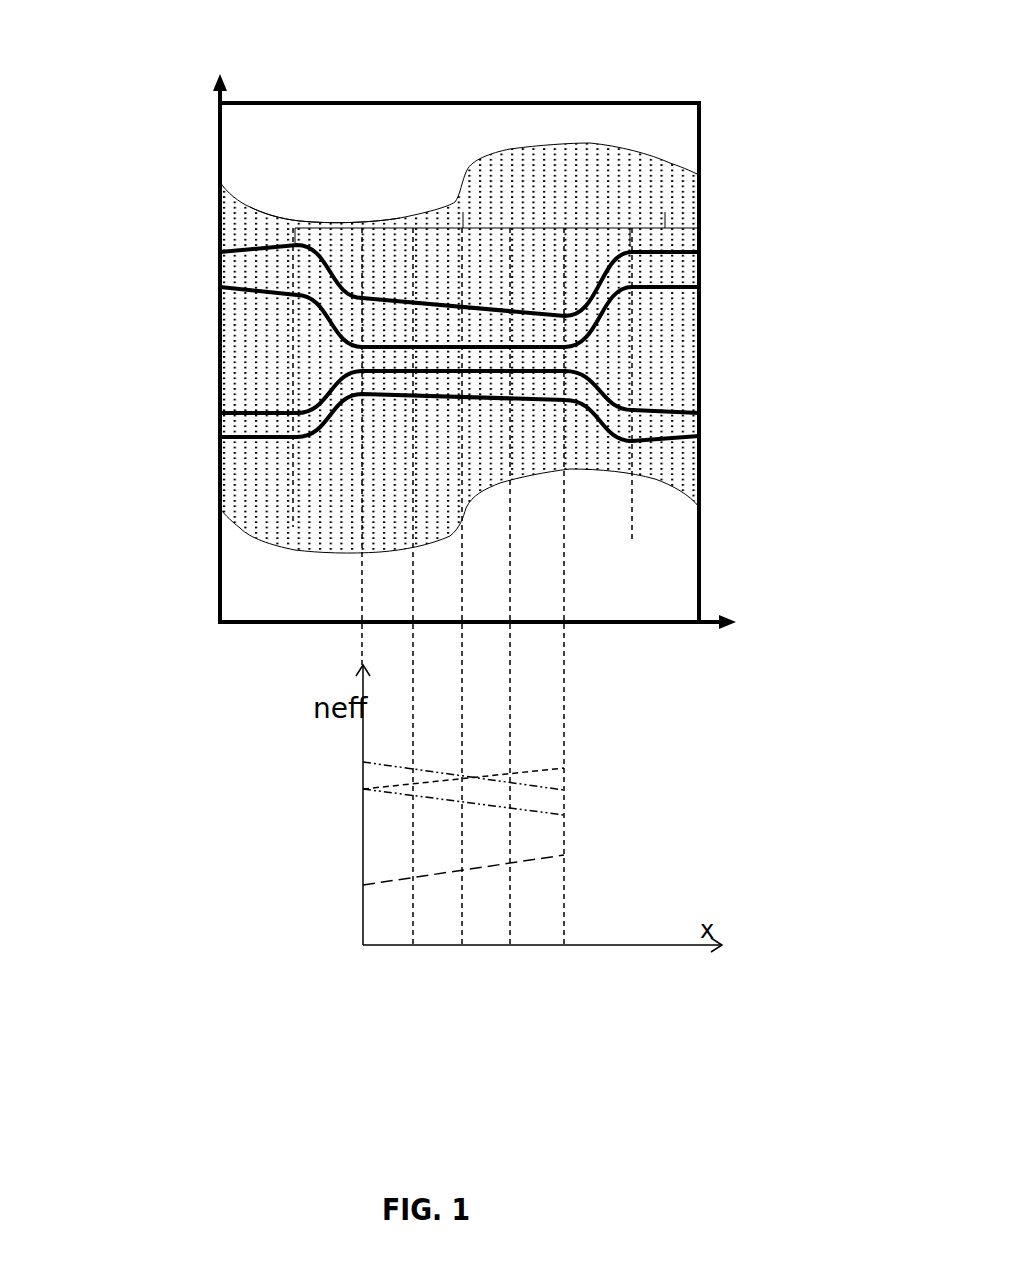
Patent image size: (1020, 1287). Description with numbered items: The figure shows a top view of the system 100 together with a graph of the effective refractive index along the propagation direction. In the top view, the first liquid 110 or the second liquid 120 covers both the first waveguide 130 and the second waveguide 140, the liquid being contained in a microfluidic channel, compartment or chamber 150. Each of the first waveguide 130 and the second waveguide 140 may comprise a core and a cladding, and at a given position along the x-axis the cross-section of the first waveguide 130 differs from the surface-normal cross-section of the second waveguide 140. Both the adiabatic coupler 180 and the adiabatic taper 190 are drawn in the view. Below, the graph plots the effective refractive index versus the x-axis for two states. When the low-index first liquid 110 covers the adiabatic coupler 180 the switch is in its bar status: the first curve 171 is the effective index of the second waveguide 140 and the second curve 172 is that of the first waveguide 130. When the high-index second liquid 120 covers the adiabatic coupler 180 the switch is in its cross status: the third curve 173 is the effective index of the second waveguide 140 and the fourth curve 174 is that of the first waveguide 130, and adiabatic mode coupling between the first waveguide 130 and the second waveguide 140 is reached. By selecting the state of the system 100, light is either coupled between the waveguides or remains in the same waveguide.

The system 100 is at (184, 58).
The first liquid 110 is at (384, 340).
The second liquid 120 is at (230, 211).
The first waveguide 130 is at (253, 275).
The second waveguide 140 is at (255, 432).
The microfluidic channel, compartment or chamber 150 is at (278, 217).
The first curve 171 is at (540, 858).
The second curve 172 is at (525, 812).
The third curve 173 is at (400, 790).
The fourth curve 174 is at (381, 762).
The adiabatic coupler 180 is at (477, 228).
The adiabatic taper 190 is at (645, 228).